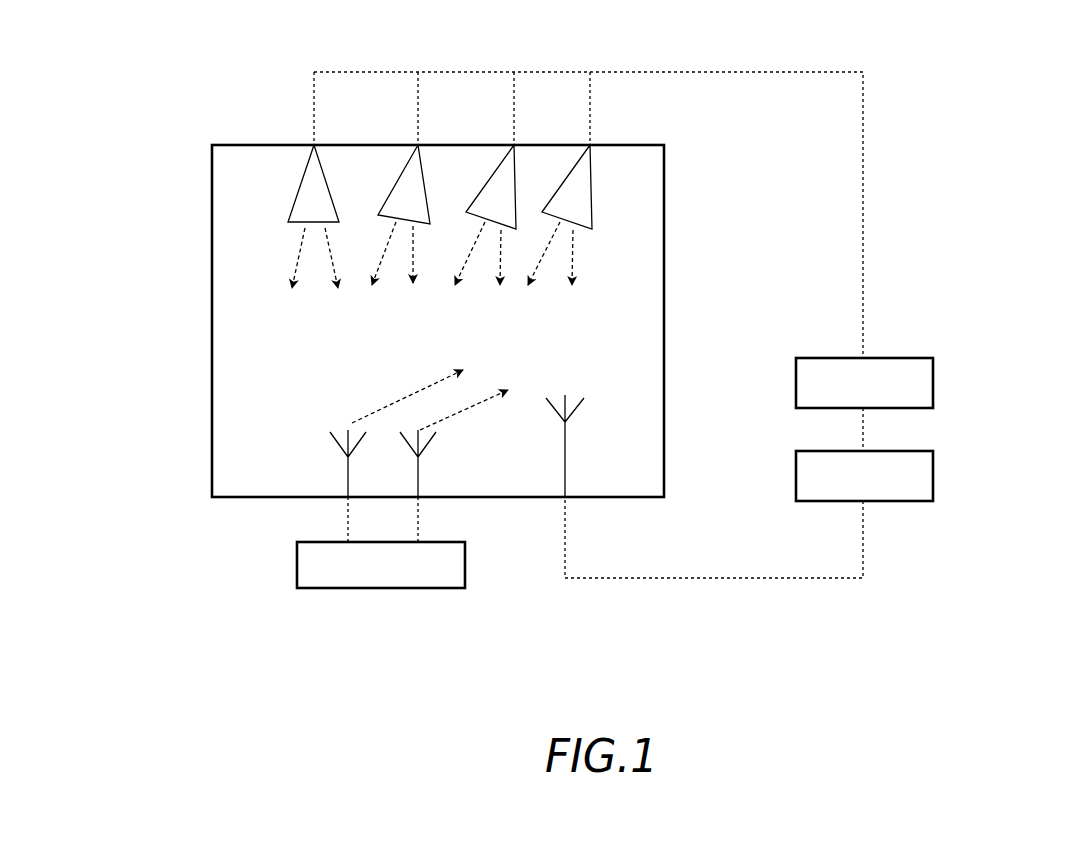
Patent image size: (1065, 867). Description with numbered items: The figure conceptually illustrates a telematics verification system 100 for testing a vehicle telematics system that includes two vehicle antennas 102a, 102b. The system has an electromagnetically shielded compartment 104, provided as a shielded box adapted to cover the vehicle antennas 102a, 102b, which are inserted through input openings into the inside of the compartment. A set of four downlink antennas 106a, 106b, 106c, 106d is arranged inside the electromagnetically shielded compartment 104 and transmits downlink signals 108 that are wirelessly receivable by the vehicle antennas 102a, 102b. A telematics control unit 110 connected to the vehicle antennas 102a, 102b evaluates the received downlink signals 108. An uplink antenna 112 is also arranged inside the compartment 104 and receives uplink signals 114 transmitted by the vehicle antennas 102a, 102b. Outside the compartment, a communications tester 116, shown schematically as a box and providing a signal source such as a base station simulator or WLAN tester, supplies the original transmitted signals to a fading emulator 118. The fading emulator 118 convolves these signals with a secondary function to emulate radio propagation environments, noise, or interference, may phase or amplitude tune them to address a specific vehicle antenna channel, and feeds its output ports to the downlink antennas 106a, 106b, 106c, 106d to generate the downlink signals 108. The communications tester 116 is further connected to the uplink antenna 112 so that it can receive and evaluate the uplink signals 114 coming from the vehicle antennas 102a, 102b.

The telematics verification system 100 is at (160, 126).
The vehicle antenna 102a is at (347, 475).
The vehicle antenna 102b is at (418, 475).
The electromagnetically shielded compartment 104 is at (210, 328).
The downlink antenna 106a is at (303, 178).
The downlink antenna 106b is at (396, 178).
The downlink antenna 106c is at (487, 175).
The downlink antenna 106d is at (567, 170).
The downlink signals 108 is at (286, 257).
The telematics control unit 110 is at (297, 570).
The uplink antenna 112 is at (576, 412).
The uplink signals 114 is at (372, 393).
The communications tester 116 is at (933, 475).
The fading emulator 118 is at (933, 383).